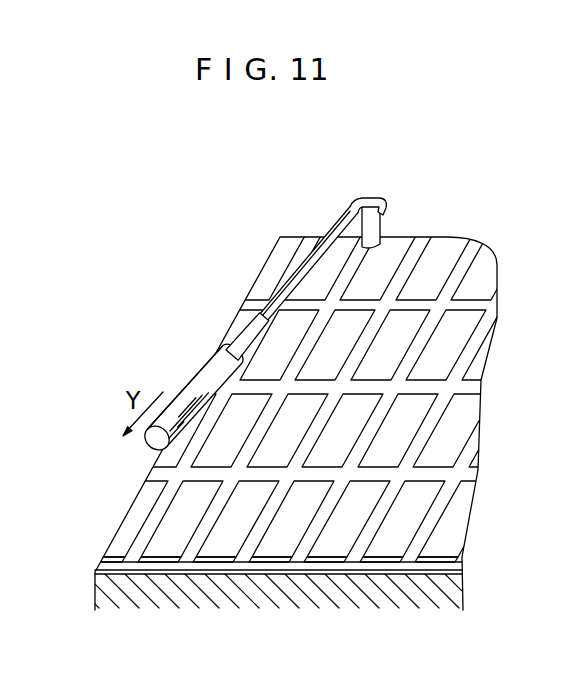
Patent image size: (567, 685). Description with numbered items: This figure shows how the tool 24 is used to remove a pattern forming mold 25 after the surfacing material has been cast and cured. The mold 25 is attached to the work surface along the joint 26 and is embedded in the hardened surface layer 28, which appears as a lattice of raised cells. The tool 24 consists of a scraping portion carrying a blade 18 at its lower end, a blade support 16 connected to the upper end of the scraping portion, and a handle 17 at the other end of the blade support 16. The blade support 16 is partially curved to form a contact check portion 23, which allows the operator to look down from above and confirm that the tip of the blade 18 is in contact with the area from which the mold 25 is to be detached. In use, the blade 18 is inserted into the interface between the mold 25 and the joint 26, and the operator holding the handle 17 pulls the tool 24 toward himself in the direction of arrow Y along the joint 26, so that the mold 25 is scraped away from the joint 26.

The blade support 16 is at (337, 232).
The handle 17 is at (178, 385).
The blade 18 is at (380, 241).
The contact check portion 23 is at (344, 206).
The tool 24 is at (190, 359).
The mold 25 is at (253, 296).
The joint 26 is at (93, 571).
The surface layer 28 is at (170, 518).